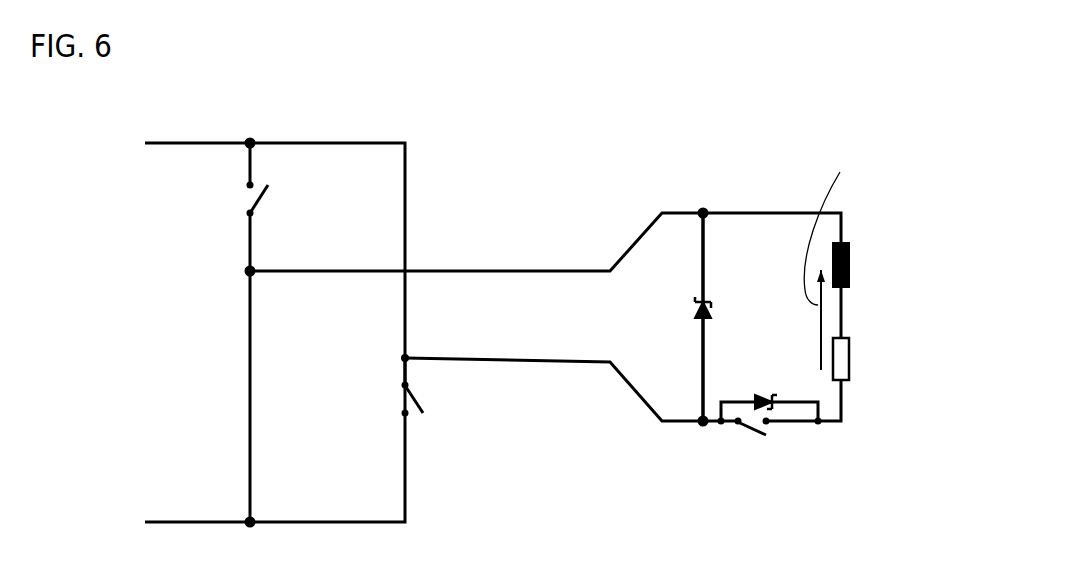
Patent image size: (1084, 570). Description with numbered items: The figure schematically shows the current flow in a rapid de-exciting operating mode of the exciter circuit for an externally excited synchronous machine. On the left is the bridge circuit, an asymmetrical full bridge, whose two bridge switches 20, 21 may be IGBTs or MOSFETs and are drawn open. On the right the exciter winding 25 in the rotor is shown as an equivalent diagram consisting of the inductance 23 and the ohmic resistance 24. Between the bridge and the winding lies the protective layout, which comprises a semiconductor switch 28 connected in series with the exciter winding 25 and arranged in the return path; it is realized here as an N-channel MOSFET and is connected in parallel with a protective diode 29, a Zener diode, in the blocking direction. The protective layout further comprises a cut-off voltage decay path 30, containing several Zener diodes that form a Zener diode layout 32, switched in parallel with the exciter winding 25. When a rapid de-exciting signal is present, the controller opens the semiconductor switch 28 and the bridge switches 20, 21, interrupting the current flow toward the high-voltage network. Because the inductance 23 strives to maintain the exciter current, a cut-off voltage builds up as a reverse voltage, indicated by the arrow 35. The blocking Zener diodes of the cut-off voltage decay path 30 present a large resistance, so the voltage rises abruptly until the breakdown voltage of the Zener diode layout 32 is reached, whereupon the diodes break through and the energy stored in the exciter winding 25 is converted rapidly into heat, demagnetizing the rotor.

The bridge switch 20 is at (240, 203).
The bridge switch 21 is at (425, 425).
The inductance 23 is at (850, 265).
The ohmic resistance 24 is at (850, 358).
The exciter winding 25 is at (850, 308).
The semiconductor switch 28 is at (775, 448).
The protective diode 29 is at (768, 392).
The cut-off voltage decay path 30 is at (698, 243).
The Zener diode layout 32 is at (685, 314).
The arrow 35 is at (825, 227).